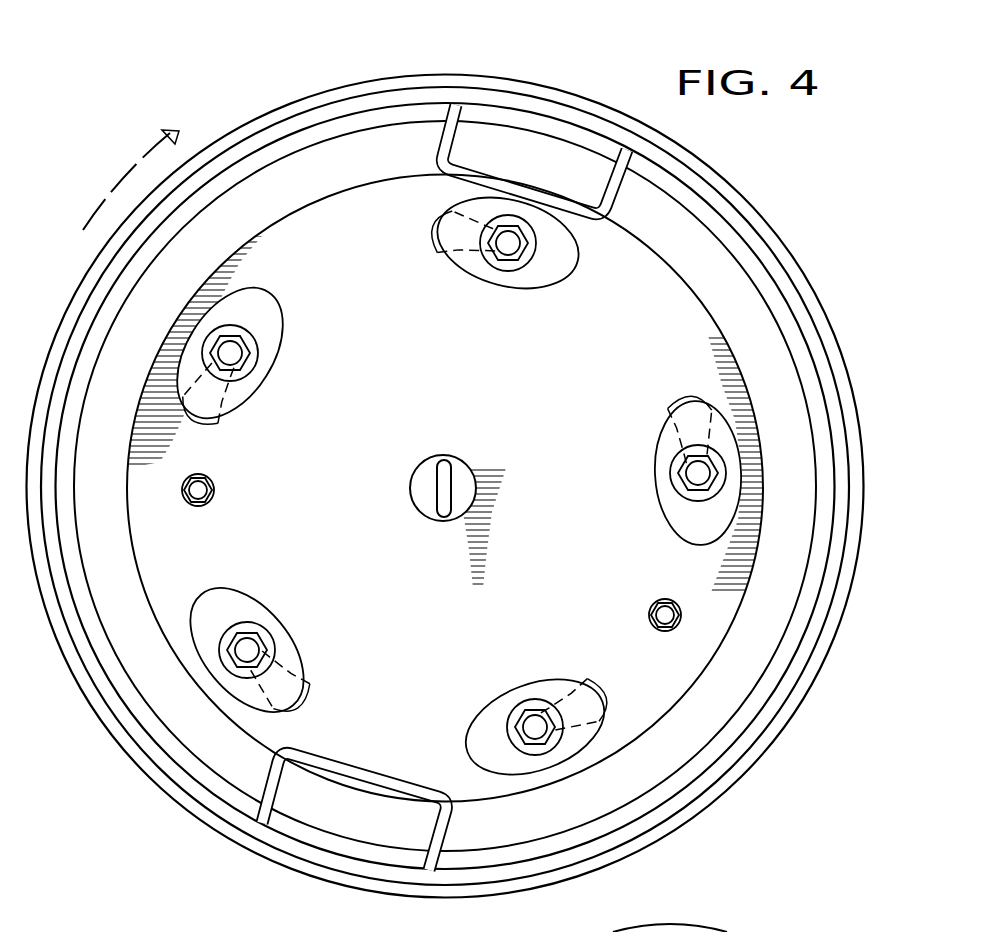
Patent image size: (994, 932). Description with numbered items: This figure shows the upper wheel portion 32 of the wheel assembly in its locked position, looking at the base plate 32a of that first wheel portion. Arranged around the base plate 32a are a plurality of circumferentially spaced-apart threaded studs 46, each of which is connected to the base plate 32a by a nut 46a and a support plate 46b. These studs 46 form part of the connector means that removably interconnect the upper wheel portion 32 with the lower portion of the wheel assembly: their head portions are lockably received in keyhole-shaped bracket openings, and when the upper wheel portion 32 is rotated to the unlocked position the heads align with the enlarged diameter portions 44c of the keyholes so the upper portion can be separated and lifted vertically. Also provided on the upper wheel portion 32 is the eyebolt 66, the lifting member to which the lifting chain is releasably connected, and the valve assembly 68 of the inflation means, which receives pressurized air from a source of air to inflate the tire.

The upper wheel portion 32 is at (796, 244).
The base plate 32a is at (445, 488).
The enlarged diameter portion 44c is at (462, 247).
The threaded stud 46 is at (506, 246).
The nut 46a is at (523, 258).
The support plate 46b is at (268, 292).
The eyebolt 66 is at (434, 509).
The valve assembly 68 is at (652, 608).